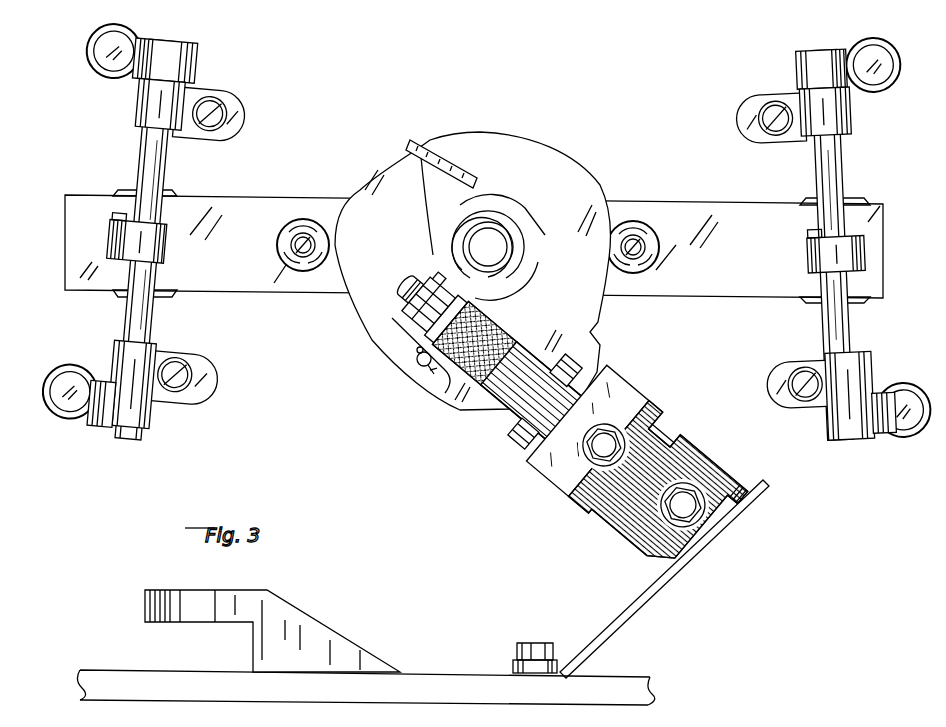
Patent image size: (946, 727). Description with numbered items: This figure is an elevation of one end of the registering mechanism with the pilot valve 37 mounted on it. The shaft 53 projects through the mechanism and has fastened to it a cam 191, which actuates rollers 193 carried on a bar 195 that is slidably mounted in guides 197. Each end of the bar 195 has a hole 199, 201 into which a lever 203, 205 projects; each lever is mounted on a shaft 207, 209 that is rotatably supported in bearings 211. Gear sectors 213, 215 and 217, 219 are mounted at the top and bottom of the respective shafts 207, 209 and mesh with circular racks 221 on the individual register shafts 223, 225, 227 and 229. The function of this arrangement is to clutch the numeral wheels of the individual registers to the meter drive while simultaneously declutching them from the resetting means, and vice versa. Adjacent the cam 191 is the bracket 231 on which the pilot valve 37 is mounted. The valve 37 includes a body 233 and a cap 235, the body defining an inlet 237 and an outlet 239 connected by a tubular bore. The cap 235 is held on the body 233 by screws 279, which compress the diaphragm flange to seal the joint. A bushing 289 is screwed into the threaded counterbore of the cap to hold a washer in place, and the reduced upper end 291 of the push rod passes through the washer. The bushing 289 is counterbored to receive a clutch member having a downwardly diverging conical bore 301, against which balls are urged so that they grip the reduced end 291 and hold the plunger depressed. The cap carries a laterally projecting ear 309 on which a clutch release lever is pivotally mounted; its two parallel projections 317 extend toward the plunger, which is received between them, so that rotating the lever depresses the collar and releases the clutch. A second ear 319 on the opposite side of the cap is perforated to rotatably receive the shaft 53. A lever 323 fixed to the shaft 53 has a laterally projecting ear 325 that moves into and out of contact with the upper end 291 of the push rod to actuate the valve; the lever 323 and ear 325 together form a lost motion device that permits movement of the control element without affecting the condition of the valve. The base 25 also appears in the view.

The base block 25 is at (337, 630).
The pilot valve 37 is at (670, 405).
The shaft 53 is at (505, 246).
The cam 191 is at (560, 162).
The rollers 193 is at (285, 228).
The bar 195 is at (708, 204).
The guides 197 is at (172, 196).
The hole 199 is at (814, 233).
The hole 201 is at (119, 217).
The lever 203 is at (836, 254).
The lever 205 is at (137, 241).
The shaft 207 is at (832, 245).
The shaft 209 is at (145, 239).
The bearings 211 is at (177, 256).
The gear sector 213 is at (822, 69).
The gear sector 215 is at (884, 412).
The gear sector 217 is at (164, 60).
The gear sector 219 is at (101, 403).
The circular racks 221 is at (92, 221).
The register shaft 223 is at (873, 65).
The register shaft 225 is at (904, 410).
The register shaft 227 is at (113, 50).
The register shaft 229 is at (69, 391).
The bracket 231 is at (649, 607).
The body 233 is at (627, 393).
The cap 235 is at (598, 375).
The inlet 237 is at (718, 462).
The outlet 239 is at (658, 437).
The screws 279 is at (516, 445).
The bushing 289 is at (488, 306).
The upper end of the push rod 291 is at (400, 282).
The conical bore 301 is at (438, 282).
The ear 309 is at (440, 385).
The projections 317 is at (412, 304).
The second ear 319 is at (538, 268).
The lever 323 is at (472, 195).
The ear 325 is at (460, 167).